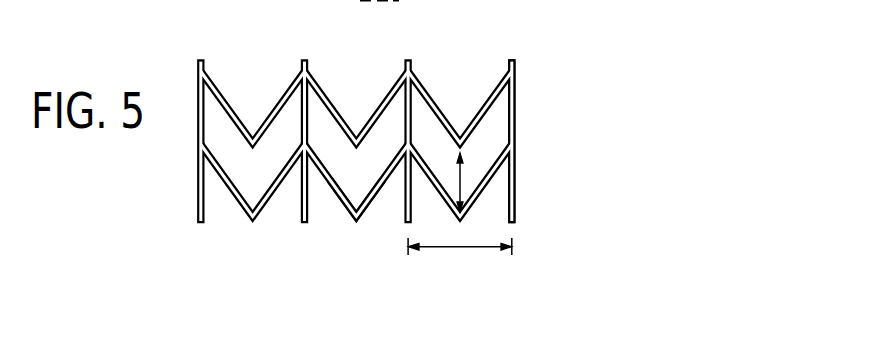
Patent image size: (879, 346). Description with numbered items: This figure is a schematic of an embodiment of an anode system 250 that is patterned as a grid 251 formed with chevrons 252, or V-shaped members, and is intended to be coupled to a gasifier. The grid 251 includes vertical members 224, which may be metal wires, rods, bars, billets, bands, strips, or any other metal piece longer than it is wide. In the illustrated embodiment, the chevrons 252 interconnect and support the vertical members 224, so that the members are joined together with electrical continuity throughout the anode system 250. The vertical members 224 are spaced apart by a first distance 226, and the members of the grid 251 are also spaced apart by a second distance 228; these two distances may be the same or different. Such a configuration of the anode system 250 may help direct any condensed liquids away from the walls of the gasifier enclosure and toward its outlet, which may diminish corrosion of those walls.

The anode system 250 is at (518, 30).
The grid 251 is at (519, 61).
The vertical members 224 is at (518, 152).
The chevrons 252 is at (356, 225).
The first distance 226 is at (457, 248).
The second distance 228 is at (462, 182).